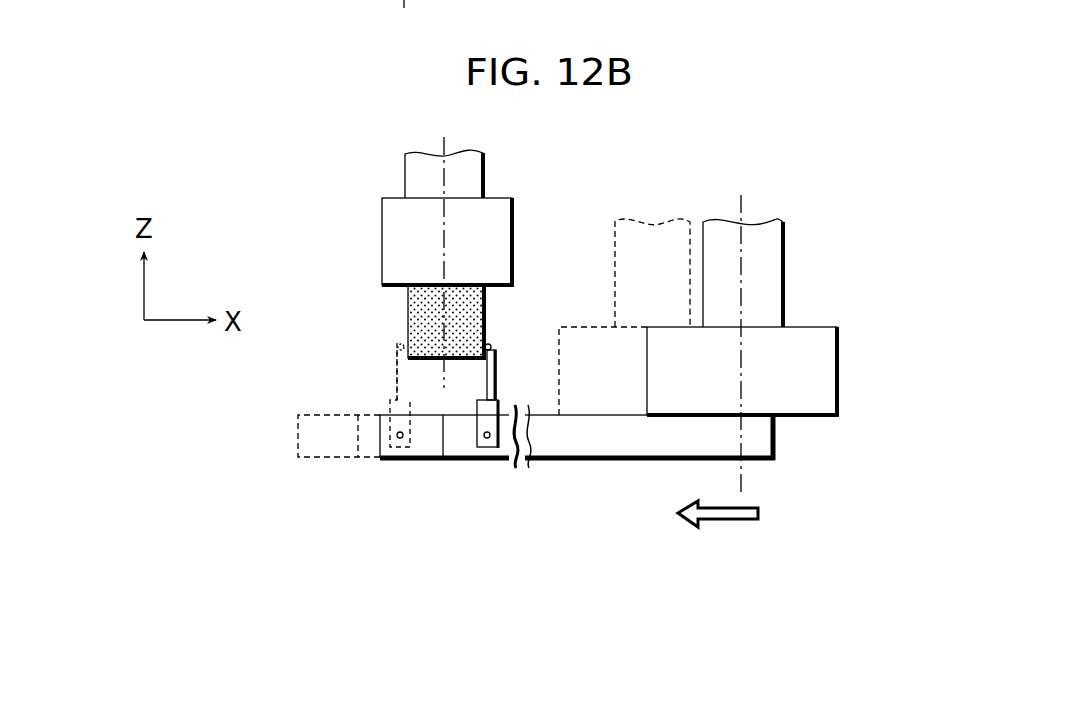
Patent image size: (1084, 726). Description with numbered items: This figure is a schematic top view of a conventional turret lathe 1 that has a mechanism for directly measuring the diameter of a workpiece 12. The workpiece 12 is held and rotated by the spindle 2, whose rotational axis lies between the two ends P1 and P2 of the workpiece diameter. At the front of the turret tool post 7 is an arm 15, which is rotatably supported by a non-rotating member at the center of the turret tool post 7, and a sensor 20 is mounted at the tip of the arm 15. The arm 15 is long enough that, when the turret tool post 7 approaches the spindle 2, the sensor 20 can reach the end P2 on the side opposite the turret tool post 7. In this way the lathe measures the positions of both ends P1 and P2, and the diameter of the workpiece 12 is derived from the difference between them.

The turret lathe 1 is at (850, 201).
The spindle 2 is at (380, 243).
The turret tool post 7 is at (792, 340).
The workpiece 12 is at (408, 322).
The arm 15 is at (612, 462).
The sensor 20 is at (478, 433).
The end of the diameter of the workpiece P1 is at (493, 328).
The end of the diameter of the workpiece P2 is at (408, 338).